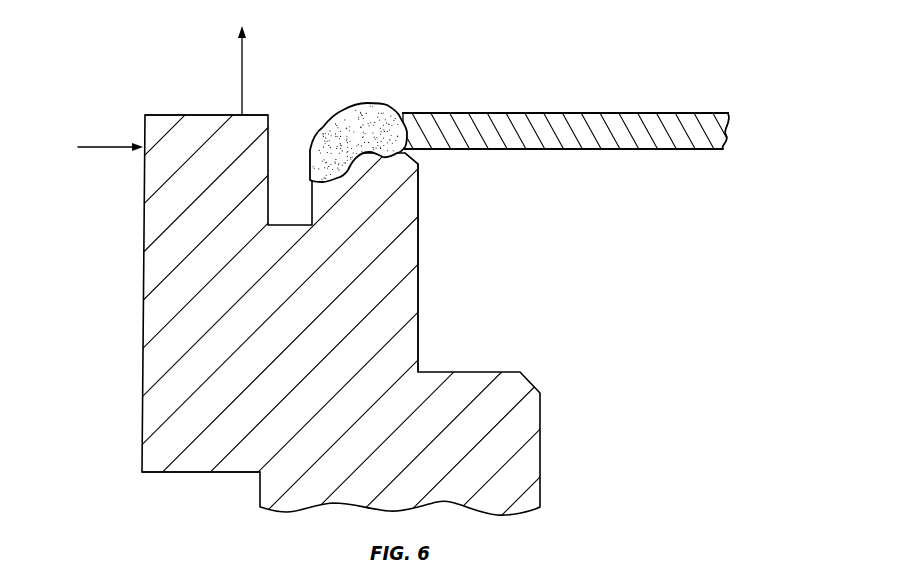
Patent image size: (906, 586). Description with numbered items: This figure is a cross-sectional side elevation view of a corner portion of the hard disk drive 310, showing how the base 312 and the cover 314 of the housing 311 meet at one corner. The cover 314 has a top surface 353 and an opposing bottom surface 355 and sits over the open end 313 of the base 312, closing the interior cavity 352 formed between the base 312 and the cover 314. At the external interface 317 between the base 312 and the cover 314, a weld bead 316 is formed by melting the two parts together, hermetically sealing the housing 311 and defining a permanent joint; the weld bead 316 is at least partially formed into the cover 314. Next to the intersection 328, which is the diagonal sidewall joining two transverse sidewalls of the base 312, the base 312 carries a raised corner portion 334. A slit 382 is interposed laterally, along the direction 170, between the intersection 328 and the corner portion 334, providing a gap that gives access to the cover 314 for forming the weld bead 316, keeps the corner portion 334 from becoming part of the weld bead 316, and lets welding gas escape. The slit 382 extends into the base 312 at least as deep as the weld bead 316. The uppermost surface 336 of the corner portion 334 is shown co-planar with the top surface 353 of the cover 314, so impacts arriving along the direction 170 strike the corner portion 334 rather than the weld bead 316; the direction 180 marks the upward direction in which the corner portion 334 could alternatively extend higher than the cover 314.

The direction 170 is at (113, 147).
The direction 180 is at (242, 62).
The hard disk drive 310 is at (718, 35).
The housing 311 is at (634, 104).
The base 312 is at (318, 480).
The open end 313 is at (408, 155).
The cover 314 is at (526, 120).
The weld bead 316 is at (387, 123).
The external interface 317 is at (416, 128).
The intersection 328 is at (398, 263).
The corner portion 334 is at (194, 474).
The uppermost surface 336 is at (192, 115).
The interior cavity 352 is at (607, 299).
The top surface 353 is at (687, 113).
The bottom surface 355 is at (613, 150).
The slit 382 is at (294, 133).